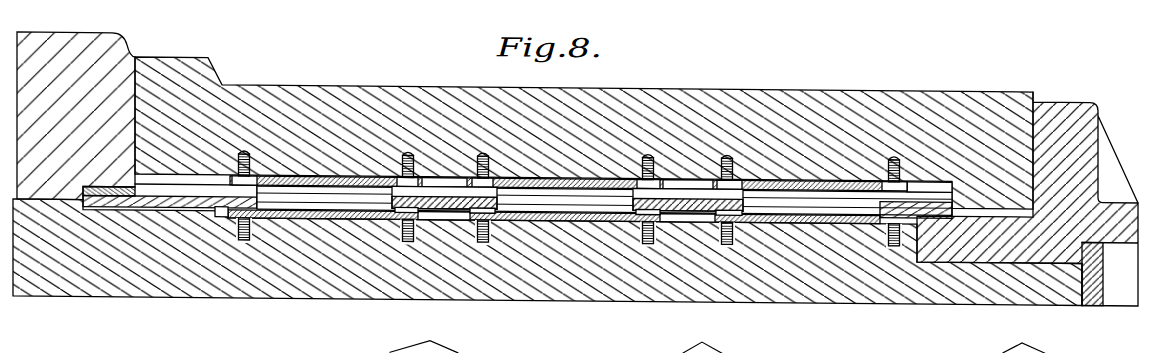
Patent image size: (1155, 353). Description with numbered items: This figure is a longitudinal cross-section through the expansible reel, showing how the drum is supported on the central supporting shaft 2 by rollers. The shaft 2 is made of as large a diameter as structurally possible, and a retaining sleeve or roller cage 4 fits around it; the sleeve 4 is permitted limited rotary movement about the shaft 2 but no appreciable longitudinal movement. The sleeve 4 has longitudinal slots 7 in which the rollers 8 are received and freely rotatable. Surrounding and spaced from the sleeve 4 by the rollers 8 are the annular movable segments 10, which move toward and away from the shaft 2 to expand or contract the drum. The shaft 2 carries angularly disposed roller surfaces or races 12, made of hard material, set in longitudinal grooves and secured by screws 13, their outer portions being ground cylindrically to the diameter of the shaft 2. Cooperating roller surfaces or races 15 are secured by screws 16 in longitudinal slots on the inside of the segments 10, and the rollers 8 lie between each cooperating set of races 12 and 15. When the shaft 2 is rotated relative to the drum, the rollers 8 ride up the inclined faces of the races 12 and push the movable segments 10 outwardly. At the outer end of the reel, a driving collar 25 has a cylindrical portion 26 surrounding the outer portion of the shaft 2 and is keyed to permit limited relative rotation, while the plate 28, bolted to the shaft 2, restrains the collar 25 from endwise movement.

The central supporting shaft 2 is at (130, 281).
The retaining sleeve or roller cage 4 is at (188, 207).
The longitudinal slots 7 is at (633, 219).
The rollers 8 is at (357, 202).
The movable segments 10 is at (665, 100).
The roller surfaces or races 12 is at (300, 215).
The screws 13 is at (480, 245).
The roller surfaces or races 15 is at (325, 179).
The screws 16 is at (483, 161).
The driving collar 25 is at (1067, 108).
The cylindrical portion 26 is at (982, 258).
The plate 28 is at (1097, 298).